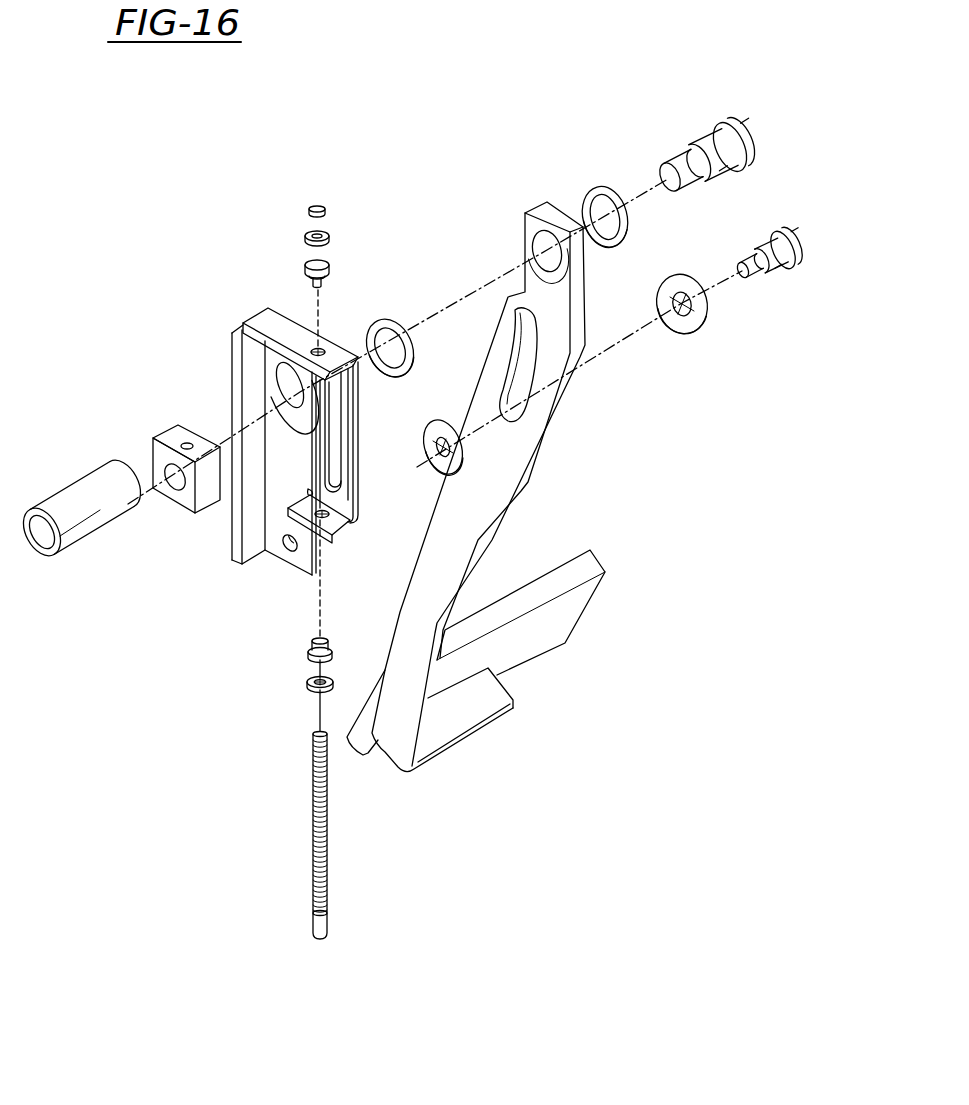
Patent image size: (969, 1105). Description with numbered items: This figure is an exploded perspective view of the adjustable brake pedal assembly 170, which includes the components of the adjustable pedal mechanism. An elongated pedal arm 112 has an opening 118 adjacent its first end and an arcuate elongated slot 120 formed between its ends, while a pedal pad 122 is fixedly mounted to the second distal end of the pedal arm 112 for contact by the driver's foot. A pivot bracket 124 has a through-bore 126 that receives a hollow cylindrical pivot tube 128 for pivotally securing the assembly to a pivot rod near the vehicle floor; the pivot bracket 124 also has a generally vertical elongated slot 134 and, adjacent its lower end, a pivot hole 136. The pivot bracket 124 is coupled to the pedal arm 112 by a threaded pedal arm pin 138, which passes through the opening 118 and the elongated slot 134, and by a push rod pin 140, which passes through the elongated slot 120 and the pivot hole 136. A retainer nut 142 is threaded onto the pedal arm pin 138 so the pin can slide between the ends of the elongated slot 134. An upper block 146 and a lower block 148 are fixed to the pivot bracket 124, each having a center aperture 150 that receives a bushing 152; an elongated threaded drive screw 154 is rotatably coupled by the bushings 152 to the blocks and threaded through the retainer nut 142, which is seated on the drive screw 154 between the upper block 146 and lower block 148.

The pedal arm 112 is at (553, 461).
The opening 118 is at (528, 248).
The elongated slot 120 is at (548, 340).
The pedal pad 122 is at (585, 603).
The pivot bracket 124 is at (226, 362).
The through-bore 126 is at (273, 379).
The pivot tube 128 is at (103, 475).
The elongated slot 134 is at (338, 445).
The pivot hole 136 is at (290, 563).
The pedal arm pin 138 is at (753, 145).
The push rod pin 140 is at (794, 272).
The retainer nut 142 is at (182, 503).
The upper block 146 is at (333, 357).
The lower block 148 is at (352, 532).
The center aperture 150 is at (312, 350).
The bushing 152 is at (327, 270).
The drive screw 154 is at (320, 903).
The adjustable brake pedal assembly 170 is at (731, 109).